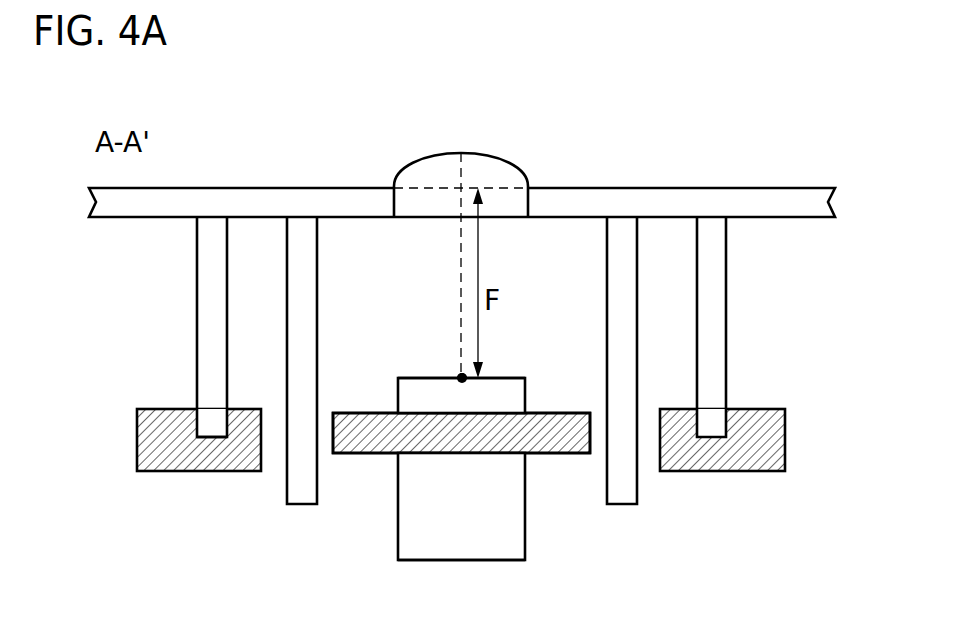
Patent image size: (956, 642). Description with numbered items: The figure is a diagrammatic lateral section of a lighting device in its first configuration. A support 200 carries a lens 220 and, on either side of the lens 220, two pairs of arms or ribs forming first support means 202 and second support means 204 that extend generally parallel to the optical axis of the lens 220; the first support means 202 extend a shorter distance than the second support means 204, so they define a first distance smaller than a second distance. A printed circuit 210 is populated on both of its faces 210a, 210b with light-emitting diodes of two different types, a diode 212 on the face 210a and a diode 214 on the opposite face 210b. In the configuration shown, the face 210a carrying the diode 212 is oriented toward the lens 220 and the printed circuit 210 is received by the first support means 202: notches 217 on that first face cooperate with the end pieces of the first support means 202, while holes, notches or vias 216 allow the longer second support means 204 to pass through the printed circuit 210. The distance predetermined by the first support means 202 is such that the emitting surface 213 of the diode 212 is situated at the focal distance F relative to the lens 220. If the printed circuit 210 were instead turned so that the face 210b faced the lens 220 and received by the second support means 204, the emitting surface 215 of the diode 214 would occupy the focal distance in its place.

The support 200 is at (263, 187).
The first support means 202 is at (197, 307).
The second support means 204 is at (302, 497).
The printed circuit 210 is at (138, 441).
The first face of the printed circuit 210a is at (552, 413).
The second face of the printed circuit 210b is at (538, 453).
The light-emitting diode 212 is at (507, 398).
The emitting surface 213 is at (420, 377).
The light-emitting diode 214 is at (398, 506).
The emitting surface 215 is at (461, 562).
The holes, notches or vias 216 is at (651, 468).
The notches 217 is at (212, 440).
The lens 220 is at (488, 168).